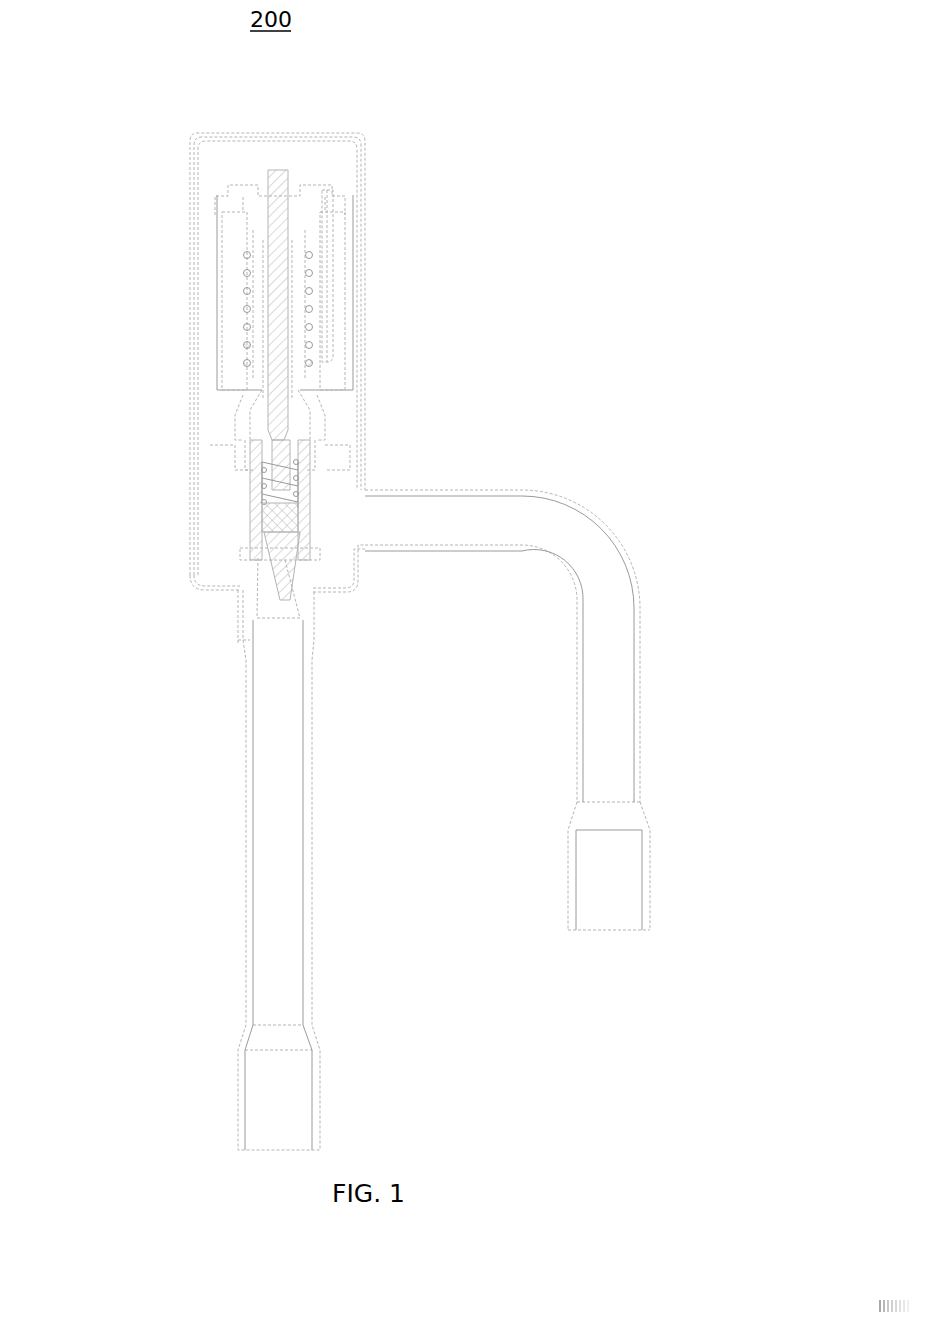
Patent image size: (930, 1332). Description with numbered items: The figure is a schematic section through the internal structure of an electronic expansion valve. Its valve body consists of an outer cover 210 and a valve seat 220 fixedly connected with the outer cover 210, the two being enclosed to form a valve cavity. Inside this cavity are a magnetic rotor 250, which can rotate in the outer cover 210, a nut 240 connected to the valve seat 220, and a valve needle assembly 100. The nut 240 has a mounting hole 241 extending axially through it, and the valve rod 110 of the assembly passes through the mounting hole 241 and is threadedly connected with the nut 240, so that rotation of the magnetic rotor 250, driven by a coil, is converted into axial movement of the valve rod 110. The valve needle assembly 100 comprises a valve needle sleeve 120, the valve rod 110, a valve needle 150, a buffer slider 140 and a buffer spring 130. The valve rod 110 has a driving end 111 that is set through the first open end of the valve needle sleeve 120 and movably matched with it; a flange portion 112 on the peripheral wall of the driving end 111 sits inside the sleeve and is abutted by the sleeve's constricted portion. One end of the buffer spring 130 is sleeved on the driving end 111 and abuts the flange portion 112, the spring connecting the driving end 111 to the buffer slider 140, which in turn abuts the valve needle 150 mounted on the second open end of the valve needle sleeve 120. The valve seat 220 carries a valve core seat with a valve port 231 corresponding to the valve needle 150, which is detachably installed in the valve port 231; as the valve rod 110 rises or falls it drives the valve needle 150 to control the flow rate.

The valve needle assembly 100 is at (285, 193).
The valve rod 110 is at (278, 358).
The driving end 111 is at (273, 468).
The flange portion 112 is at (293, 452).
The valve needle sleeve 120 is at (305, 521).
The buffer spring 130 is at (262, 492).
The buffer slider 140 is at (264, 525).
The valve needle 150 is at (276, 568).
The outer cover 210 is at (196, 253).
The valve seat 220 is at (222, 587).
The valve port 231 is at (285, 605).
The nut 240 is at (298, 348).
The mounting hole 241 is at (289, 268).
The magnetic rotor 250 is at (208, 307).